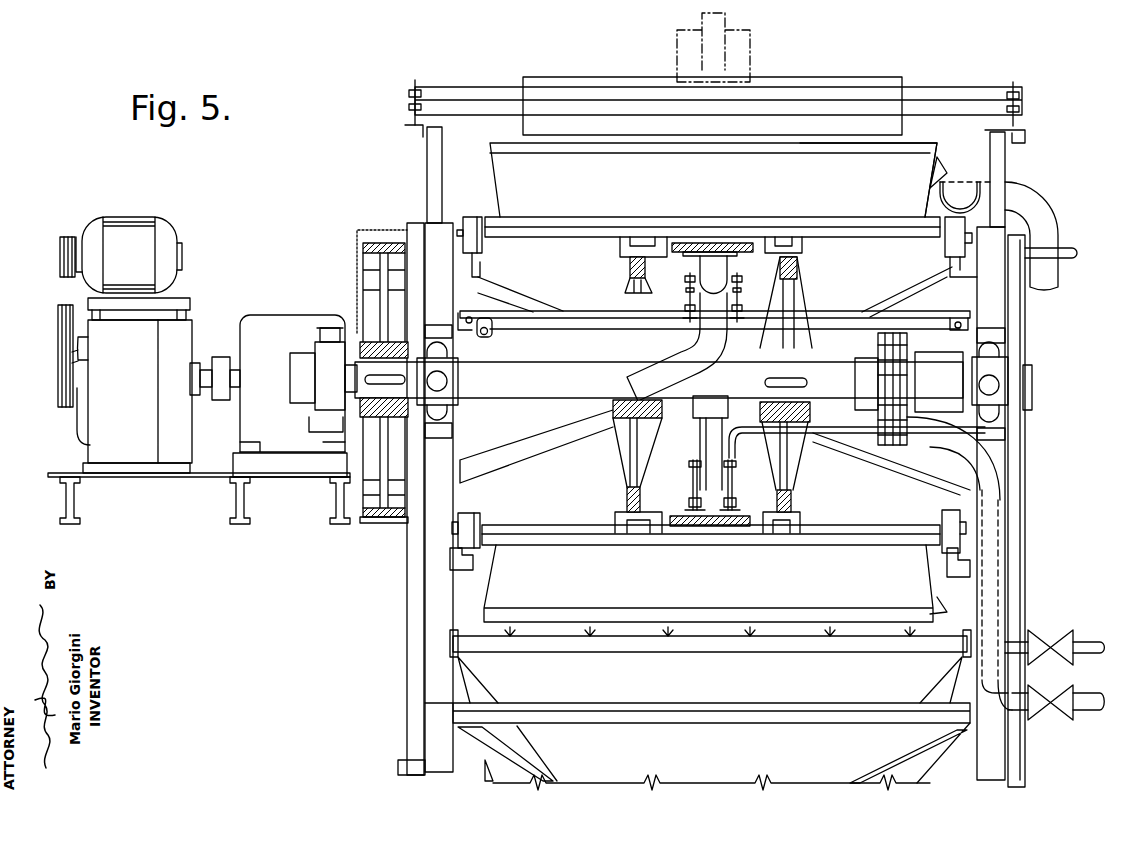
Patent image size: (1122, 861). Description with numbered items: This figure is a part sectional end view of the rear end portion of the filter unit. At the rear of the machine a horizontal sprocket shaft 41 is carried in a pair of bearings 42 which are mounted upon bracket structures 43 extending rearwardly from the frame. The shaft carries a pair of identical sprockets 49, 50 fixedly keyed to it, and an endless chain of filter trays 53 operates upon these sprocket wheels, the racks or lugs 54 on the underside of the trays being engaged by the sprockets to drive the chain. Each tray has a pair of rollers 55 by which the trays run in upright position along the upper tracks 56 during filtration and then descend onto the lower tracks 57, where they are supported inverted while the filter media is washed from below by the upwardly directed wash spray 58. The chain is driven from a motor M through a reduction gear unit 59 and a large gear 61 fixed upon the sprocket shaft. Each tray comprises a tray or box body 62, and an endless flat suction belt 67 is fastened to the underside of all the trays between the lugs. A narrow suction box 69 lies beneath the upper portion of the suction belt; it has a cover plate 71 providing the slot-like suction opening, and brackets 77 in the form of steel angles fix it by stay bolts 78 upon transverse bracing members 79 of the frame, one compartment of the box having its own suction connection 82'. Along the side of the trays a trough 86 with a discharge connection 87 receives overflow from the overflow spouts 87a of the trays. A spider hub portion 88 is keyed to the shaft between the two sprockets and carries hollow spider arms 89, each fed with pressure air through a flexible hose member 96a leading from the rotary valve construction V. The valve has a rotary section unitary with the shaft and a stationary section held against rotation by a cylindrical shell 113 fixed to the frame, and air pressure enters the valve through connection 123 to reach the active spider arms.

The motor M is at (127, 216).
The sprocket shaft 41 is at (510, 400).
The bearings 42 is at (443, 399).
The bracket structures 43 is at (442, 516).
The sprocket 49 is at (800, 468).
The sprocket 50 is at (612, 468).
The filter trays 53 is at (491, 166).
The racks or lugs 54 is at (620, 248).
The rollers 55 is at (472, 215).
The upper tracks 56 is at (483, 263).
The lower tracks 57 is at (476, 560).
The wash spray 58 is at (664, 630).
The reduction gear unit 59 is at (305, 315).
The large gear 61 is at (378, 524).
The tray or box body 62 is at (897, 166).
The suction belt 67 is at (677, 254).
The suction box 69 is at (710, 284).
The cover plate 71 is at (738, 255).
The brackets 77 is at (800, 288).
The stay bolts 78 is at (741, 306).
The transverse bracing members 79 is at (620, 312).
The suction connection 82' is at (676, 347).
The trough 86 is at (957, 192).
The discharge connection 87 is at (1050, 215).
The overflow spouts 87a is at (938, 170).
The hub portion 88 is at (692, 418).
The spider arms 89 is at (689, 462).
The flexible tube or hose member 96a is at (821, 440).
The cylindrical shell 113 is at (945, 362).
The air pressure connection 123 is at (925, 443).
The rotary valve construction V is at (892, 460).